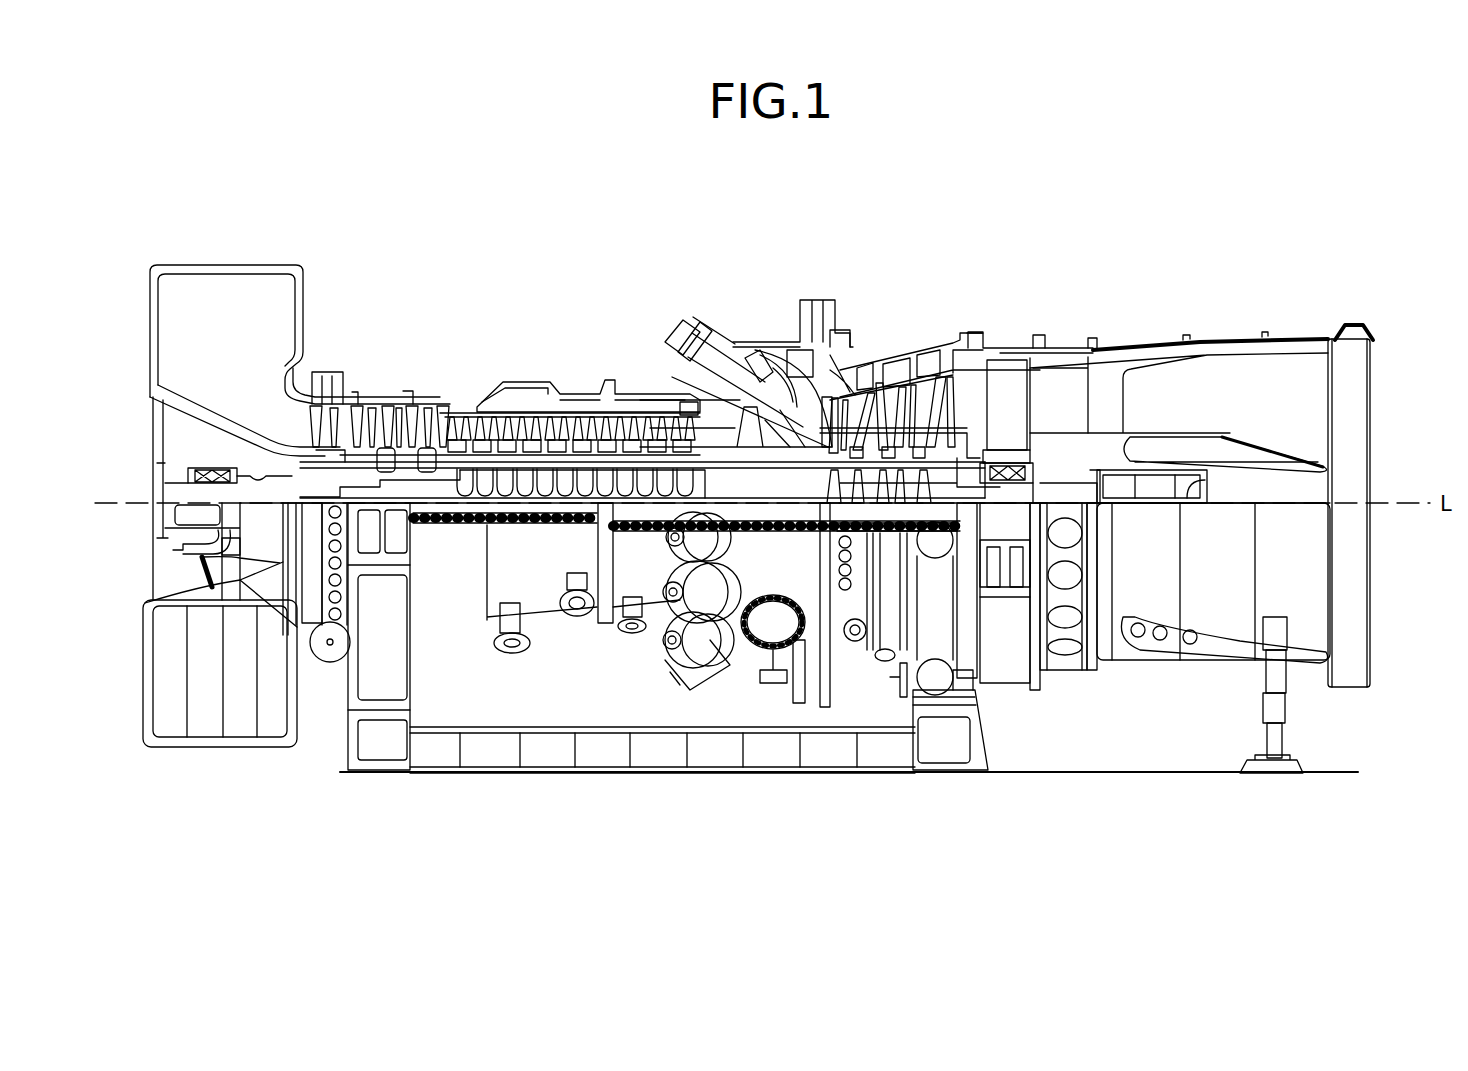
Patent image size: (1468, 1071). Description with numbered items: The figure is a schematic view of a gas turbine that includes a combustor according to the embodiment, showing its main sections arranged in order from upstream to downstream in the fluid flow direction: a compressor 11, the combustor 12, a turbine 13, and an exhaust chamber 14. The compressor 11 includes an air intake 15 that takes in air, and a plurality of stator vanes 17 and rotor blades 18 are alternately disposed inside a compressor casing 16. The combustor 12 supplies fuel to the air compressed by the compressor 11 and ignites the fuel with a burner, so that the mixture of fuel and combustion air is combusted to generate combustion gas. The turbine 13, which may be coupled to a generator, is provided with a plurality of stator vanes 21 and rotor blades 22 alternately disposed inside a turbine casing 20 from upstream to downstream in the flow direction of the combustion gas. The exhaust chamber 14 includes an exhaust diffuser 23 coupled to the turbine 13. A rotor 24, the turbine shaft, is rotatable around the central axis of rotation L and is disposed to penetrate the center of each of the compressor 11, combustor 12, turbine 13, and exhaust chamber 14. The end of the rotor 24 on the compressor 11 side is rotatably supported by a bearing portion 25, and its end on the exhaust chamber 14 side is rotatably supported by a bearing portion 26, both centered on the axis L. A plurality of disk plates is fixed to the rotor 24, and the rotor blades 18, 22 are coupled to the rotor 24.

The compressor 11 is at (385, 353).
The combustor 12 is at (699, 309).
The turbine 13 is at (983, 324).
The exhaust chamber 14 is at (1209, 341).
The air intake 15 is at (163, 333).
The compressor casing 16 is at (434, 420).
The stator vanes 17 is at (388, 417).
The rotor blades 18 is at (441, 410).
The turbine casing 20 is at (905, 362).
The stator vanes 21 is at (841, 402).
The rotor blades 22 is at (837, 405).
The exhaust diffuser 23 is at (1090, 386).
The rotor 24 is at (722, 478).
The bearing portion 25 is at (200, 478).
The bearing portion 26 is at (1027, 477).